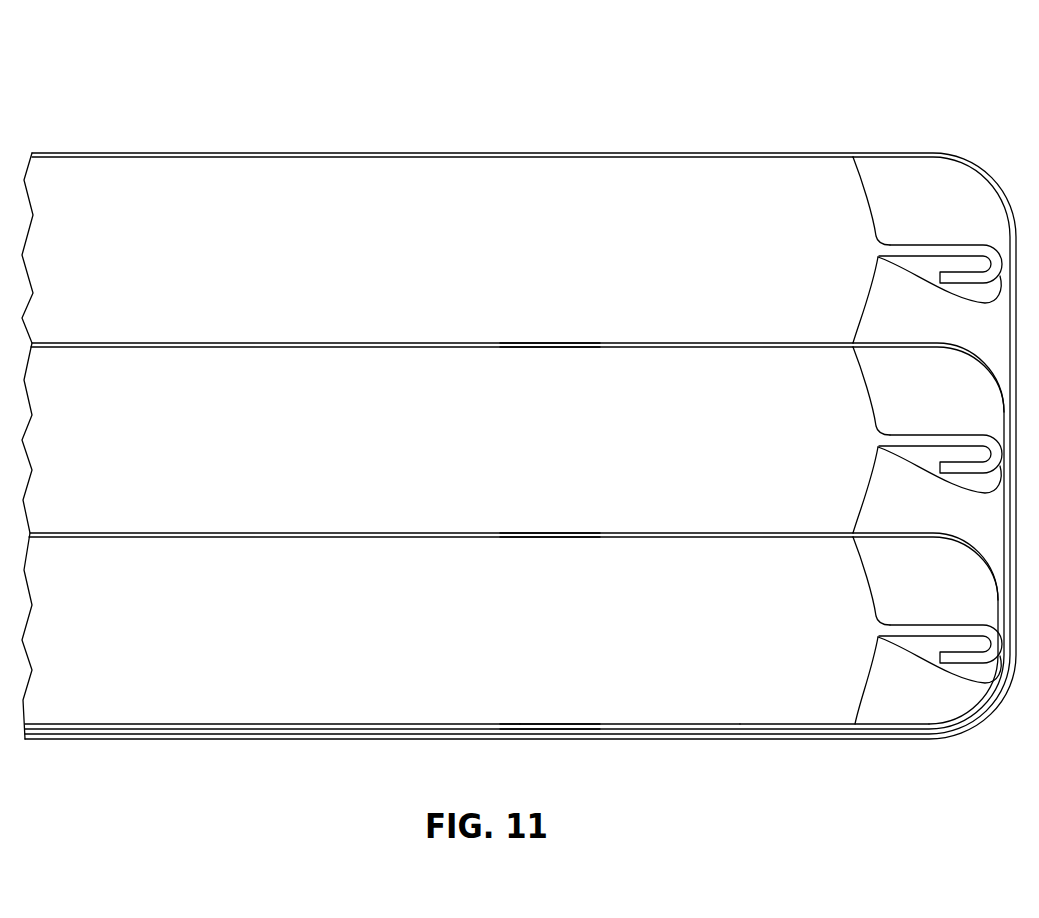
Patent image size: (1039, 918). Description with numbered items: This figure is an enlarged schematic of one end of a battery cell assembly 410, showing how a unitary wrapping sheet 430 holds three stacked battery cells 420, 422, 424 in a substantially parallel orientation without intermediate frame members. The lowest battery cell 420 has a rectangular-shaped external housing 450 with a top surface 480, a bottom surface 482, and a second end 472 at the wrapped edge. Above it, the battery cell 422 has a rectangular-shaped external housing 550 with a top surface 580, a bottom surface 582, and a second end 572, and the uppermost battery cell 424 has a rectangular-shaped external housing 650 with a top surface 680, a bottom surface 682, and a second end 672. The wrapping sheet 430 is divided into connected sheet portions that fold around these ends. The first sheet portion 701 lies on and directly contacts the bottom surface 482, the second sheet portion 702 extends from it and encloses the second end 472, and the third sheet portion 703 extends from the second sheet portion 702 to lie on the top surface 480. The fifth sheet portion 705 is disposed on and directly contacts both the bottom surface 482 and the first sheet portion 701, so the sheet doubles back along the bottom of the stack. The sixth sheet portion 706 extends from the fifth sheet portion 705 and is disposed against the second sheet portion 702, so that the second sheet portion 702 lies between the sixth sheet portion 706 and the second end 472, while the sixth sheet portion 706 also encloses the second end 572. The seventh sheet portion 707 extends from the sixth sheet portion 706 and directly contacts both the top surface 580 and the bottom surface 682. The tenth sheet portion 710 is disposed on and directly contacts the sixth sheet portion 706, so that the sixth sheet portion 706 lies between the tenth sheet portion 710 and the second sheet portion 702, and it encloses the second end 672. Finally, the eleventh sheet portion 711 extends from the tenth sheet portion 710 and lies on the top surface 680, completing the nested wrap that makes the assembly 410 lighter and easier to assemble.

The battery cell assembly 410 is at (534, 104).
The battery cell 420 is at (224, 642).
The battery cell 422 is at (224, 452).
The battery cell 424 is at (224, 262).
The unitary wrapping sheet 430 is at (700, 153).
The rectangular-shaped external housing 450 is at (545, 695).
The second end 472 is at (880, 637).
The top surface 480 is at (343, 537).
The bottom surface 482 is at (380, 724).
The rectangular-shaped external housing 550 is at (545, 507).
The second end 572 is at (880, 447).
The top surface 580 is at (343, 347).
The bottom surface 582 is at (380, 533).
The rectangular-shaped external housing 650 is at (545, 317).
The second end 672 is at (880, 257).
The top surface 680 is at (343, 157).
The bottom surface 682 is at (380, 343).
The first sheet portion 701 is at (767, 724).
The second sheet portion 702 is at (980, 702).
The third sheet portion 703 is at (668, 537).
The fifth sheet portion 705 is at (640, 724).
The sixth sheet portion 706 is at (1008, 517).
The seventh sheet portion 707 is at (653, 341).
The tenth sheet portion 710 is at (1011, 331).
The eleventh sheet portion 711 is at (808, 153).